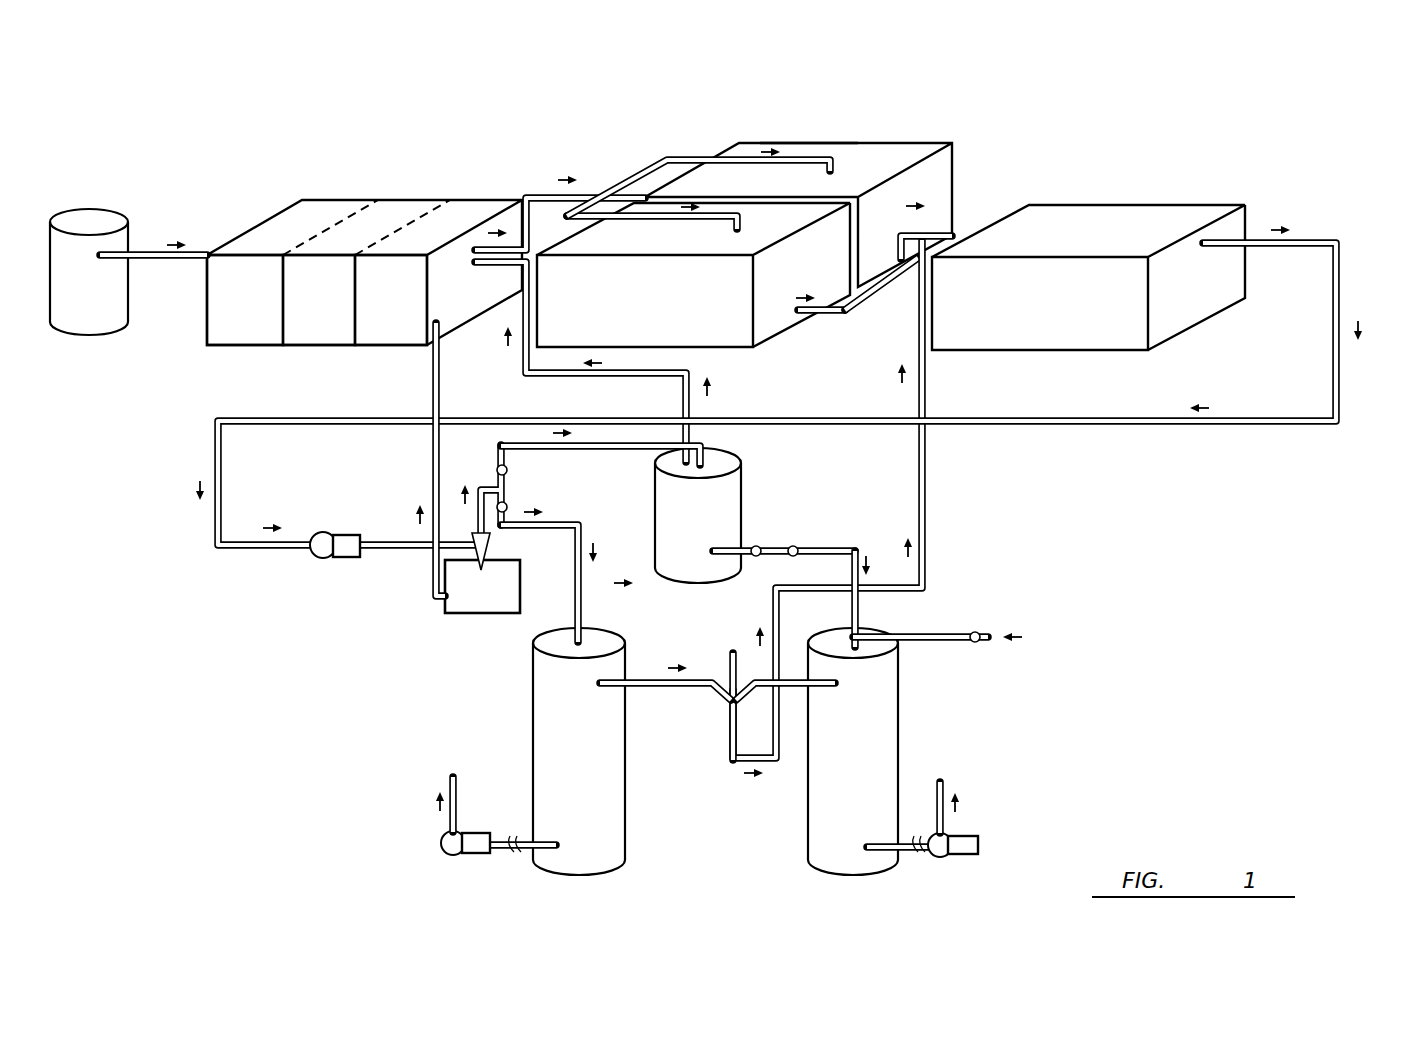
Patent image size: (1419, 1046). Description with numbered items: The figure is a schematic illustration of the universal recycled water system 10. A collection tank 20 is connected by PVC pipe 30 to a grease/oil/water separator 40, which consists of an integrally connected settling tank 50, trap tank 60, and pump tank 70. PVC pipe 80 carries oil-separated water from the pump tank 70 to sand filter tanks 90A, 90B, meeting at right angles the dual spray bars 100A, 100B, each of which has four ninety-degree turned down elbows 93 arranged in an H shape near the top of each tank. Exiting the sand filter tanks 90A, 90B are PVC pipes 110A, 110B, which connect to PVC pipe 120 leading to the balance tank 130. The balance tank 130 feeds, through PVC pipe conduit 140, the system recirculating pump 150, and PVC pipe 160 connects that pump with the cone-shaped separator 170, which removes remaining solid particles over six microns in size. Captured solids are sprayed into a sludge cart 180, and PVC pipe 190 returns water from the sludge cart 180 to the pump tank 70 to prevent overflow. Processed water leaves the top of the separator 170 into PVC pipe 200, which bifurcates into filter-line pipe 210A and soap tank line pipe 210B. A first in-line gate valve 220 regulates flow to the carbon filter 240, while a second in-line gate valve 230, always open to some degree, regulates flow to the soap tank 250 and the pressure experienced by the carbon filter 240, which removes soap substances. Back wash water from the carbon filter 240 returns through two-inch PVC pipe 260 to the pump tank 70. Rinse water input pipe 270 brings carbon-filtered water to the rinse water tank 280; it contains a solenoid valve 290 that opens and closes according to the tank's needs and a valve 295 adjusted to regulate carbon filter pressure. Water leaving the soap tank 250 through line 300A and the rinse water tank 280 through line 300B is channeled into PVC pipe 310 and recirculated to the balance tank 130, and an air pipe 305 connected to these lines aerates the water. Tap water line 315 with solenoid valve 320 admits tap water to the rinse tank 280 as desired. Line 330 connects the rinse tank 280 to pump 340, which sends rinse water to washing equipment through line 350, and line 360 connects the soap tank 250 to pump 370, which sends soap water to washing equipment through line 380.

The universal recycled water system 10 is at (203, 130).
The collection tank 20 is at (72, 322).
The PVC pipe 30 is at (163, 256).
The grease/oil/water separator 40 is at (361, 267).
The settling tank 50 is at (247, 335).
The trap tank 60 is at (318, 333).
The pump tank 70 is at (396, 333).
The PVC pipe 80 is at (542, 193).
The sand filter tank 90A is at (683, 330).
The sand filter tank 90B is at (873, 160).
The turned down elbow 93 is at (838, 166).
The spray bar 100A is at (644, 212).
The spray bar 100B is at (693, 158).
The PVC pipe 110A is at (852, 307).
The PVC pipe 110B is at (912, 278).
The PVC pipe 120 is at (955, 237).
The balance tank 130 is at (1093, 330).
The PVC pipe conduit 140 is at (1340, 272).
The system recirculating pump 150 is at (323, 558).
The PVC pipe 160 is at (411, 551).
The separator 170 is at (488, 550).
The sludge cart 180 is at (490, 614).
The PVC pipe 190 is at (432, 484).
The PVC pipe 200 is at (485, 483).
The filter-line pipe 210A is at (580, 448).
The soap tank line pipe 210B is at (581, 610).
The first in-line gate valve 220 is at (507, 470).
The second in-line gate valve 230 is at (507, 507).
The carbon filter 240 is at (735, 490).
The soap tank 250 is at (613, 750).
The PVC pipe 260 is at (522, 365).
The rinse water input pipe 270 is at (828, 548).
The rinse water tank 280 is at (880, 738).
The solenoid valve 290 is at (756, 547).
The valve 295 is at (788, 558).
The line 300A is at (698, 686).
The line 300B is at (793, 688).
The air pipe 305 is at (730, 658).
The PVC pipe 310 is at (930, 503).
The tap water line 315 is at (920, 641).
The solenoid valve 320 is at (980, 644).
The line 330 is at (907, 856).
The pump 340 is at (943, 858).
The line 350 is at (938, 823).
The line 360 is at (507, 858).
The pump 370 is at (445, 851).
The line 380 is at (455, 812).